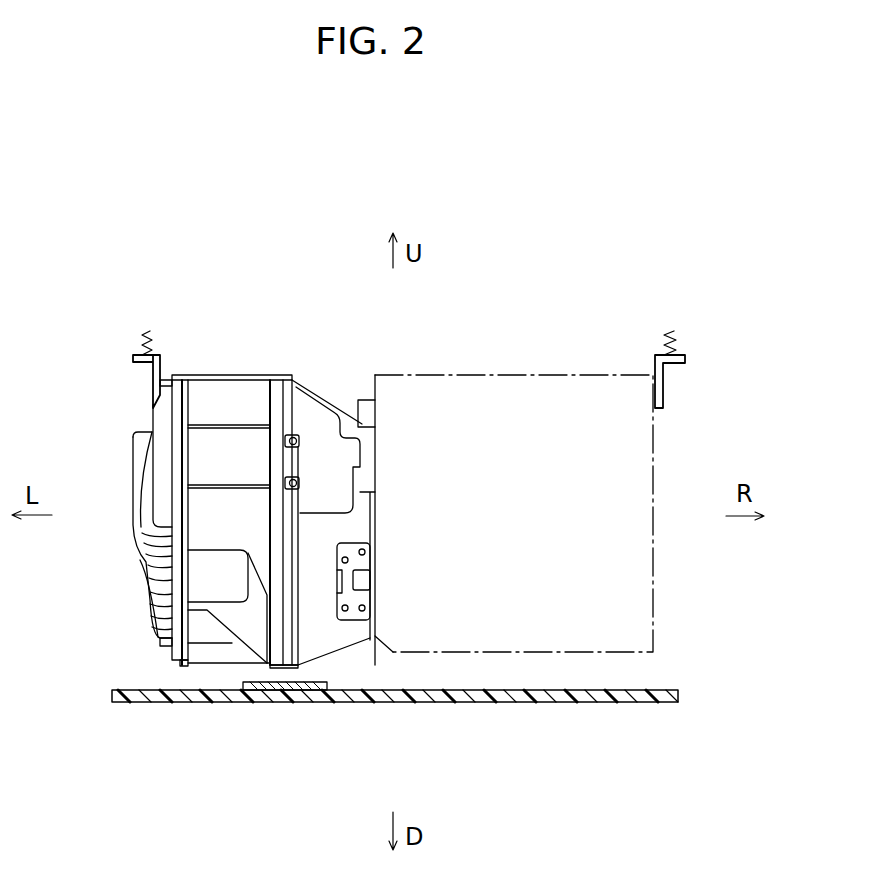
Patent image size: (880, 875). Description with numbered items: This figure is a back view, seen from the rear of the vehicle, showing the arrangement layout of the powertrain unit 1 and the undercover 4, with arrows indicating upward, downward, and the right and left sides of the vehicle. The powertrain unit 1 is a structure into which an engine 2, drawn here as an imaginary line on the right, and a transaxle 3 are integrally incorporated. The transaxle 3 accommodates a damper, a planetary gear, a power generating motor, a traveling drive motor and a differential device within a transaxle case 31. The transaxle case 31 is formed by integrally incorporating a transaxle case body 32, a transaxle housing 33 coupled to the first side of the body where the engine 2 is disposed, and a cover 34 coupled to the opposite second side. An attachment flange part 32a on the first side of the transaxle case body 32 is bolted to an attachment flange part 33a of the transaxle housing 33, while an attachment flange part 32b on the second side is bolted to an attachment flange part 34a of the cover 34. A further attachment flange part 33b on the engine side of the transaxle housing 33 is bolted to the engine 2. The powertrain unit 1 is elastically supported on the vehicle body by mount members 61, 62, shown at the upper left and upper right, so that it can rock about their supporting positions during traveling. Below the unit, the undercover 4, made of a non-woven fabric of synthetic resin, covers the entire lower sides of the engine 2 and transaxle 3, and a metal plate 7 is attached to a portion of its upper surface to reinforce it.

The powertrain unit 1 is at (133, 421).
The engine 2 is at (520, 365).
The transaxle 3 is at (220, 362).
The transaxle case 31 is at (281, 362).
The transaxle case body 32 is at (213, 634).
The attachment flange part 32a is at (273, 668).
The attachment flange part 32b is at (184, 664).
The transaxle housing 33 is at (314, 412).
The attachment flange part 33a is at (292, 646).
The attachment flange part 33b is at (366, 403).
The cover 34 is at (165, 459).
The attachment flange part 34a is at (175, 654).
The undercover 4 is at (521, 713).
The metal plate 7 is at (326, 682).
The mount member 61 is at (154, 386).
The mount member 62 is at (663, 384).